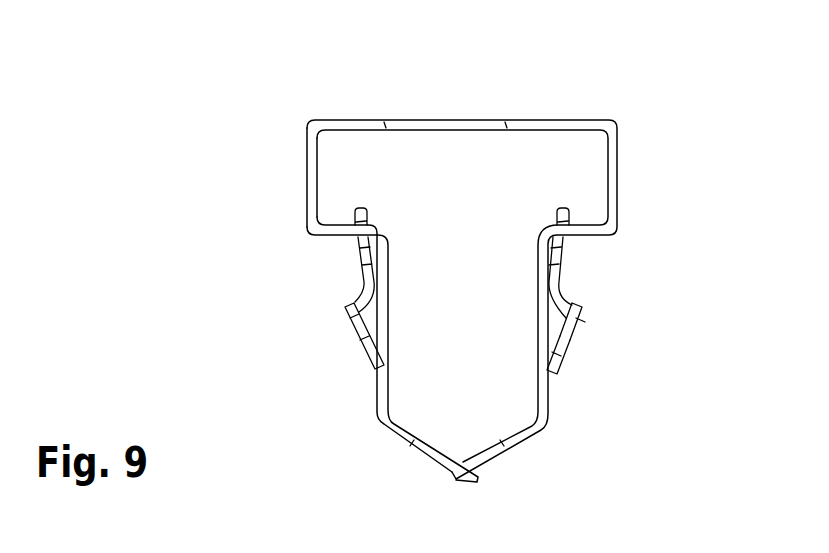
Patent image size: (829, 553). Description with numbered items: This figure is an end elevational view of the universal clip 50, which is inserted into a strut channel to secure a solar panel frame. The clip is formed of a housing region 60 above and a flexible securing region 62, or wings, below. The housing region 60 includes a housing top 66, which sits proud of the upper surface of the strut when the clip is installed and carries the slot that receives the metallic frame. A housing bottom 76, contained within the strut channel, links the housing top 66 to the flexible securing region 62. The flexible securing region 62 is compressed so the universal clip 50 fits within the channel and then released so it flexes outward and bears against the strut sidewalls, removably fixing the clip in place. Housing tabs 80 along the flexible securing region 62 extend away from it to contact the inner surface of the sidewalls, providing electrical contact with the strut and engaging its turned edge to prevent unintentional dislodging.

The universal clip 50 is at (670, 98).
The housing region 60 is at (615, 154).
The housing top 66 is at (308, 156).
The housing tabs 80 is at (575, 305).
The flexible securing region 62 is at (571, 340).
The housing bottom 76 is at (541, 374).